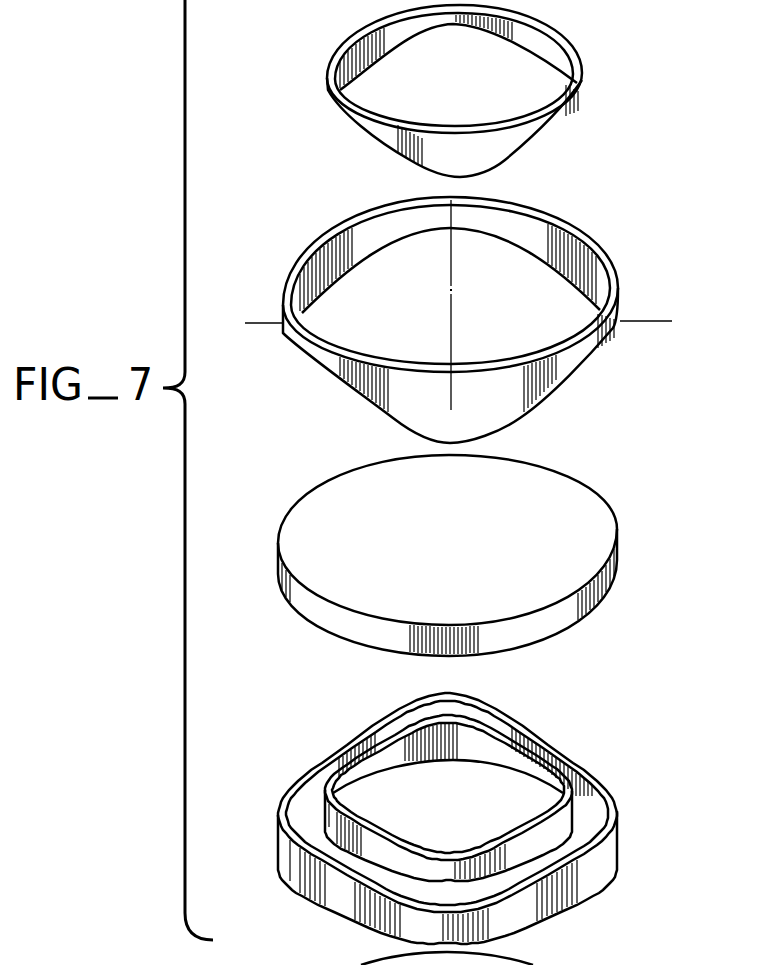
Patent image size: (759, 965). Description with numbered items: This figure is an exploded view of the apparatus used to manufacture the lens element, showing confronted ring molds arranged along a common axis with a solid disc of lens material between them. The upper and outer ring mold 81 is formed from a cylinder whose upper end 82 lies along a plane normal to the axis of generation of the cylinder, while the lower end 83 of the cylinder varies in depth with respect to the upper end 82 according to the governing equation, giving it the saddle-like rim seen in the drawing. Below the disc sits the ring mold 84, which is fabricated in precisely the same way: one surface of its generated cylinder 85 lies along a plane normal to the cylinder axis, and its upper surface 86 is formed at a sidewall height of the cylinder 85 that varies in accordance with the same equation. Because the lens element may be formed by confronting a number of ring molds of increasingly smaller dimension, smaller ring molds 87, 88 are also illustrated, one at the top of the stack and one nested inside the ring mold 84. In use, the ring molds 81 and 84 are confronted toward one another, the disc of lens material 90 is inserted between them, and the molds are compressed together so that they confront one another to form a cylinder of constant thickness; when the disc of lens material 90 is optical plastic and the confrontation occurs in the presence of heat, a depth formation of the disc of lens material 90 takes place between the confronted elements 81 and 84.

The upper and outer ring mold 81 is at (463, 311).
The upper end 82 is at (567, 219).
The lower end 83 is at (547, 270).
The ring mold 84 is at (472, 823).
The cylinder 85 is at (557, 920).
The upper surface 86 is at (545, 741).
The smaller ring mold 87 is at (486, 161).
The smaller ring mold 88 is at (544, 854).
The disc of lens material 90 is at (522, 589).